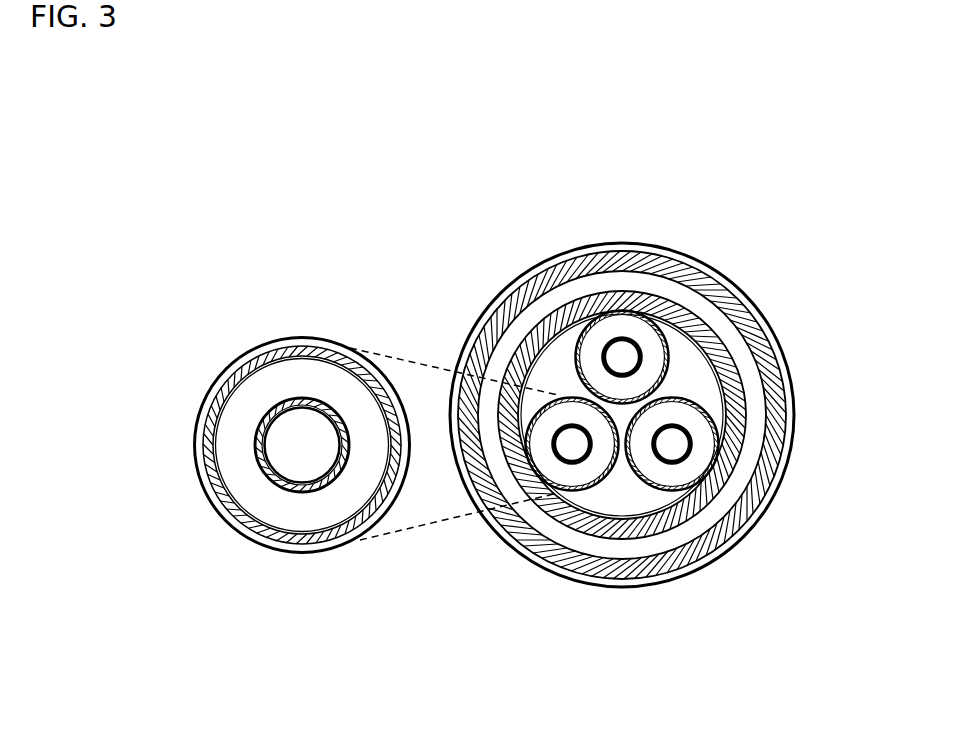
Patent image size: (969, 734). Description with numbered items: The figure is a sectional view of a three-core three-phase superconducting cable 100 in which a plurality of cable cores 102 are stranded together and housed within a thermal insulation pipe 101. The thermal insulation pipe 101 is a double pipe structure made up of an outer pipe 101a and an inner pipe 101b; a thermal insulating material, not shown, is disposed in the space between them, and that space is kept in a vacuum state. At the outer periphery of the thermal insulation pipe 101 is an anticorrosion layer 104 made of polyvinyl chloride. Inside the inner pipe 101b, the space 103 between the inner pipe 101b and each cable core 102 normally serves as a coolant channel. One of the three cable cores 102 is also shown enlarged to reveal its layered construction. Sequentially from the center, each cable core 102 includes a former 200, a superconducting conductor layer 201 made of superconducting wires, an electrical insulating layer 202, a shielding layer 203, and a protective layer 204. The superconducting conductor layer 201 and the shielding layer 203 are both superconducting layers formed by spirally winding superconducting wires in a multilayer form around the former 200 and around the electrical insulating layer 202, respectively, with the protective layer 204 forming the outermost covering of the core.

The superconducting cable 100 is at (675, 428).
The thermal insulation pipe 101 is at (680, 387).
The outer pipe 101a is at (750, 330).
The inner pipe 101b is at (680, 302).
The cable core 102 is at (392, 390).
The space 103 is at (716, 395).
The anticorrosion layer 104 is at (790, 469).
The former 200 is at (257, 438).
The superconducting conductor layer 201 is at (258, 463).
The electrical insulating layer 202 is at (253, 495).
The shielding layer 203 is at (272, 540).
The protective layer 204 is at (331, 549).